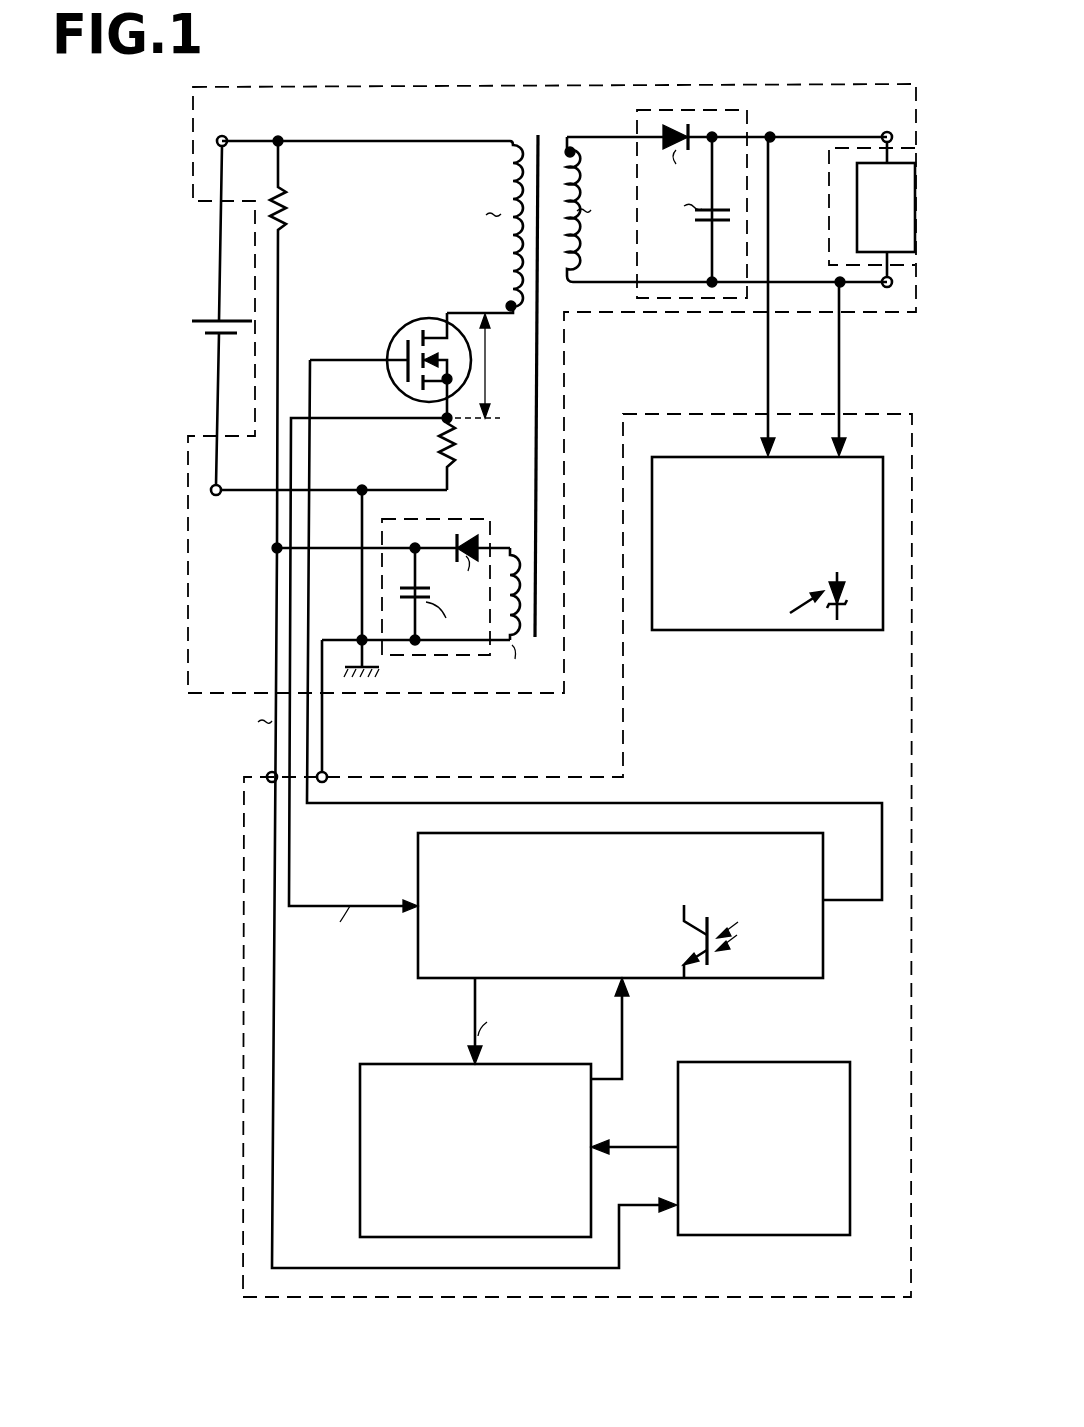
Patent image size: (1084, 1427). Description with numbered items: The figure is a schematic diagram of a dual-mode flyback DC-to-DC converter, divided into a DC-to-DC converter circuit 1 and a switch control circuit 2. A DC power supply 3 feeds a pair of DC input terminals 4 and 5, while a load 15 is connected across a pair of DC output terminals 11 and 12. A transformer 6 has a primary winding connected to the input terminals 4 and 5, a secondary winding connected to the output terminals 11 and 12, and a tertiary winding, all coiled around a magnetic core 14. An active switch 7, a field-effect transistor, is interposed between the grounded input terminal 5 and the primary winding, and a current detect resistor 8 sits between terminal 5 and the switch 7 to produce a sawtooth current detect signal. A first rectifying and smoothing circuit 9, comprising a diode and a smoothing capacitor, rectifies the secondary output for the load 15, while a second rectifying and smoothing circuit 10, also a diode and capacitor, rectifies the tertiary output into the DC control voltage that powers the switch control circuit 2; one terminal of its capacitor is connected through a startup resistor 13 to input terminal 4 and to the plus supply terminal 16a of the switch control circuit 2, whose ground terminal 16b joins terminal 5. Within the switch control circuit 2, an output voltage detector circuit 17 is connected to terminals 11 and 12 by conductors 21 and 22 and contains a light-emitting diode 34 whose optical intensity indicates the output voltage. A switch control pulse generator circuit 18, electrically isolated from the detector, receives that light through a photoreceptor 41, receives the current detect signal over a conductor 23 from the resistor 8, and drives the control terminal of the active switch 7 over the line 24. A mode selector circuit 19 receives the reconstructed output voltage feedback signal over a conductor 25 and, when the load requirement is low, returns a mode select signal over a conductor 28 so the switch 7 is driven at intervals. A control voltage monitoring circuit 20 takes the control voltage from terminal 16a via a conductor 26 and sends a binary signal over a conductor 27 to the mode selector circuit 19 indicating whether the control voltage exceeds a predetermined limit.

The DC-to-DC converter circuit 1 is at (626, 315).
The switch control circuit 2 is at (868, 412).
The DC power supply 3 is at (213, 318).
The DC input terminal 4 is at (222, 137).
The DC input terminal 5 is at (216, 496).
The transformer 6 is at (547, 134).
The active switch 7 is at (418, 318).
The current detect resistor 8 is at (438, 453).
The first rectifying and smoothing circuit 9 is at (752, 127).
The second rectifying and smoothing circuit 10 is at (441, 521).
The DC output terminal 11 is at (887, 132).
The DC output terminal 12 is at (887, 288).
The startup resistor 13 is at (285, 207).
The magnetic core 14 is at (533, 449).
The load 15 is at (917, 206).
The plus supply terminal 16a is at (267, 775).
The ground terminal 16b is at (327, 775).
The output voltage detector circuit 17 is at (780, 632).
The switch control pulse generator circuit 18 is at (826, 943).
The mode selector circuit 19 is at (540, 1063).
The control voltage monitoring circuit 20 is at (704, 1058).
The conductor 21 is at (765, 350).
The conductor 22 is at (836, 349).
The conductor 23 is at (318, 901).
The drive signal output line 24 is at (675, 800).
The conductor 25 is at (471, 1018).
The conductor 26 is at (275, 1039).
The conductor 27 is at (626, 1145).
The conductor 28 is at (620, 1030).
The light-emitting diode 34 is at (832, 591).
The photoreceptor 41 is at (684, 942).